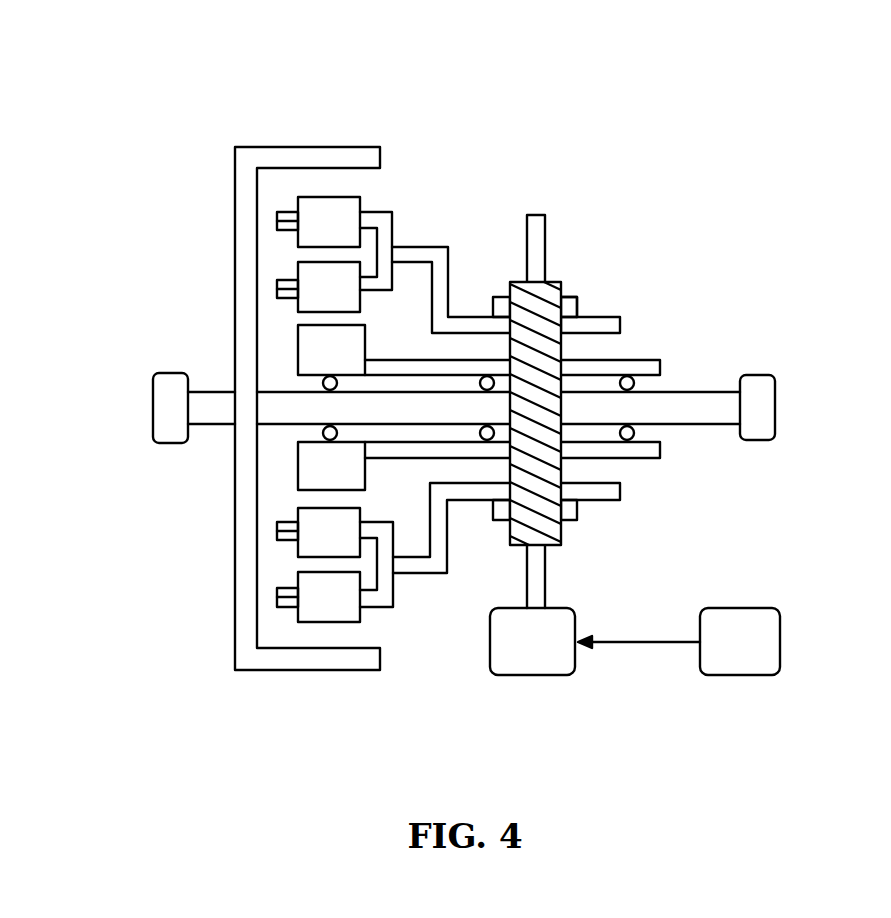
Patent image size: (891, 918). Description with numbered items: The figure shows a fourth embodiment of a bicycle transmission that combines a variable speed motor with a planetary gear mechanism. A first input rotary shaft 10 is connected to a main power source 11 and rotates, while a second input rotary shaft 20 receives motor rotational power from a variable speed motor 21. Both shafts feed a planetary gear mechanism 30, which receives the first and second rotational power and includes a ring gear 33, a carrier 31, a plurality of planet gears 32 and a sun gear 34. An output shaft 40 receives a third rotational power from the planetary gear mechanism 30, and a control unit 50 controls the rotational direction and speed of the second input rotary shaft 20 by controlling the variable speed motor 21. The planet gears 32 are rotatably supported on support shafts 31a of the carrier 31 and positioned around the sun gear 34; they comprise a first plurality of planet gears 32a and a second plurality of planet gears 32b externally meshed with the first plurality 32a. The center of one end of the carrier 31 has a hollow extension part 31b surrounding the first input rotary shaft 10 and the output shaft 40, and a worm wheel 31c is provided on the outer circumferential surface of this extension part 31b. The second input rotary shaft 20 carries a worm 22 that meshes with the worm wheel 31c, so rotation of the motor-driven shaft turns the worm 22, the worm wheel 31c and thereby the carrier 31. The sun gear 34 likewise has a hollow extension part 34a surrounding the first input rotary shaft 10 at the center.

The first input rotary shaft 10 is at (710, 425).
The main power source 11 is at (155, 415).
The second input rotary shaft 20 is at (536, 215).
The variable speed motor 21 is at (520, 650).
The worm 22 is at (560, 282).
The planetary gear mechanism 30 is at (757, 130).
The carrier 31 is at (447, 245).
The support shafts 31a is at (278, 598).
The extension part 31b is at (622, 320).
The worm wheel 31c is at (578, 298).
The planet gears 32 is at (218, 256).
The first plurality of planet gears 32a is at (278, 288).
The second plurality of planet gears 32b is at (278, 220).
The ring gear 33 is at (332, 147).
The sun gear 34 is at (298, 458).
The extension part 34a is at (400, 452).
The output shaft 40 is at (660, 362).
The control unit 50 is at (765, 640).